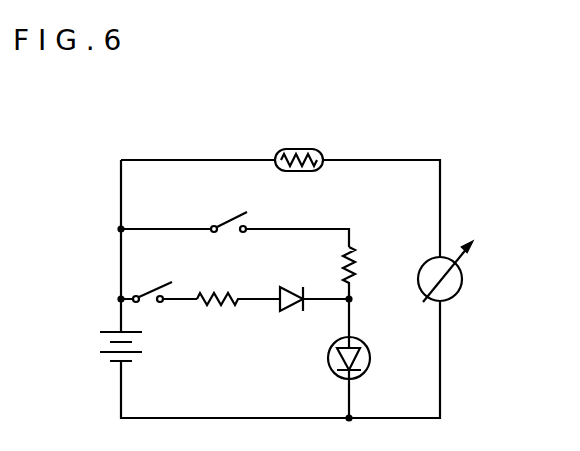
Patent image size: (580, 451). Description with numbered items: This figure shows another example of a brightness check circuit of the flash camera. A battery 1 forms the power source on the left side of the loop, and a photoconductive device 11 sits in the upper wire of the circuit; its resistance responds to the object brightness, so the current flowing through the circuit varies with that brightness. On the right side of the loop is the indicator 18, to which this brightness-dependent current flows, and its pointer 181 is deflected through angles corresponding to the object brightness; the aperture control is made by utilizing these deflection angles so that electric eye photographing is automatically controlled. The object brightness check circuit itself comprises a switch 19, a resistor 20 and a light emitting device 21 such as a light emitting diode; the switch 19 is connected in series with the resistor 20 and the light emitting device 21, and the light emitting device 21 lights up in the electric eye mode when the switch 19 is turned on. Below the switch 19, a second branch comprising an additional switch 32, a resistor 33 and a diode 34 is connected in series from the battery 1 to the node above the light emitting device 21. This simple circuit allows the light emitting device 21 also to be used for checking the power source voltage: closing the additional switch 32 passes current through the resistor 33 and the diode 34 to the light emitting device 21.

The battery 1 is at (98, 340).
The photoconductive device 11 is at (312, 150).
The indicator 18 is at (452, 289).
The pointer 181 is at (460, 257).
The switch 19 is at (232, 218).
The resistor 20 is at (356, 260).
The light emitting device 21 is at (363, 361).
The additional switch 32 is at (150, 301).
The resistor 33 is at (214, 293).
The diode 34 is at (296, 310).